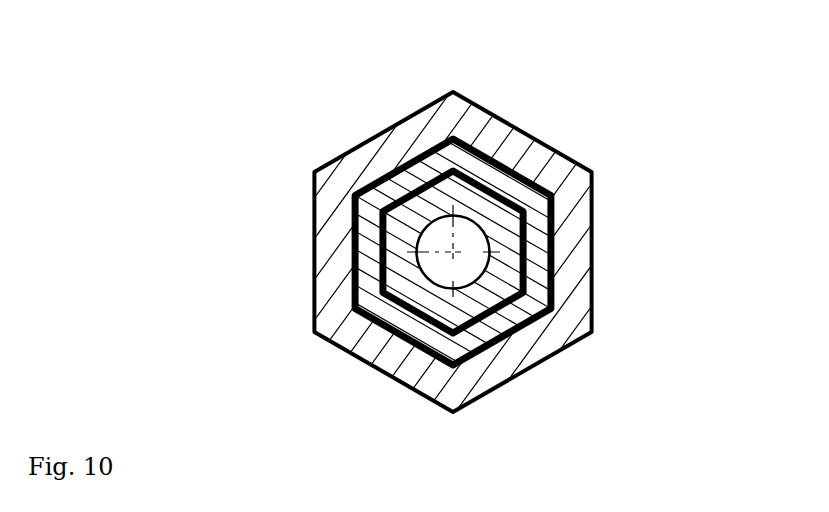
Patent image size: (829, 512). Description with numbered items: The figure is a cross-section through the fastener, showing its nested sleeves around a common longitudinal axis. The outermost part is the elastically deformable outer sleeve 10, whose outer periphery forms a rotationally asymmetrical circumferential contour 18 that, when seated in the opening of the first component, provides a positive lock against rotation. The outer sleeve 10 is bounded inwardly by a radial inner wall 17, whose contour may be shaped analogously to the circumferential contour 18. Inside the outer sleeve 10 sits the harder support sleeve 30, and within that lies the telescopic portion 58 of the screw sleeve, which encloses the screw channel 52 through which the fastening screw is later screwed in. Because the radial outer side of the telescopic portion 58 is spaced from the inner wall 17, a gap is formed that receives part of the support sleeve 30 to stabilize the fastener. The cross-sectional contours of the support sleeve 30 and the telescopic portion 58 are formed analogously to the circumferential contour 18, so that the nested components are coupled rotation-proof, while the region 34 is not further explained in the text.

The outer sleeve 10 is at (457, 256).
The radial inner wall 17 is at (397, 163).
The rotationally asymmetrical circumferential contour 18 is at (593, 335).
The support sleeve 30 is at (490, 333).
The intermediate layer 34 is at (533, 257).
The screw channel 52 is at (463, 240).
The telescopic portion 58 is at (427, 285).